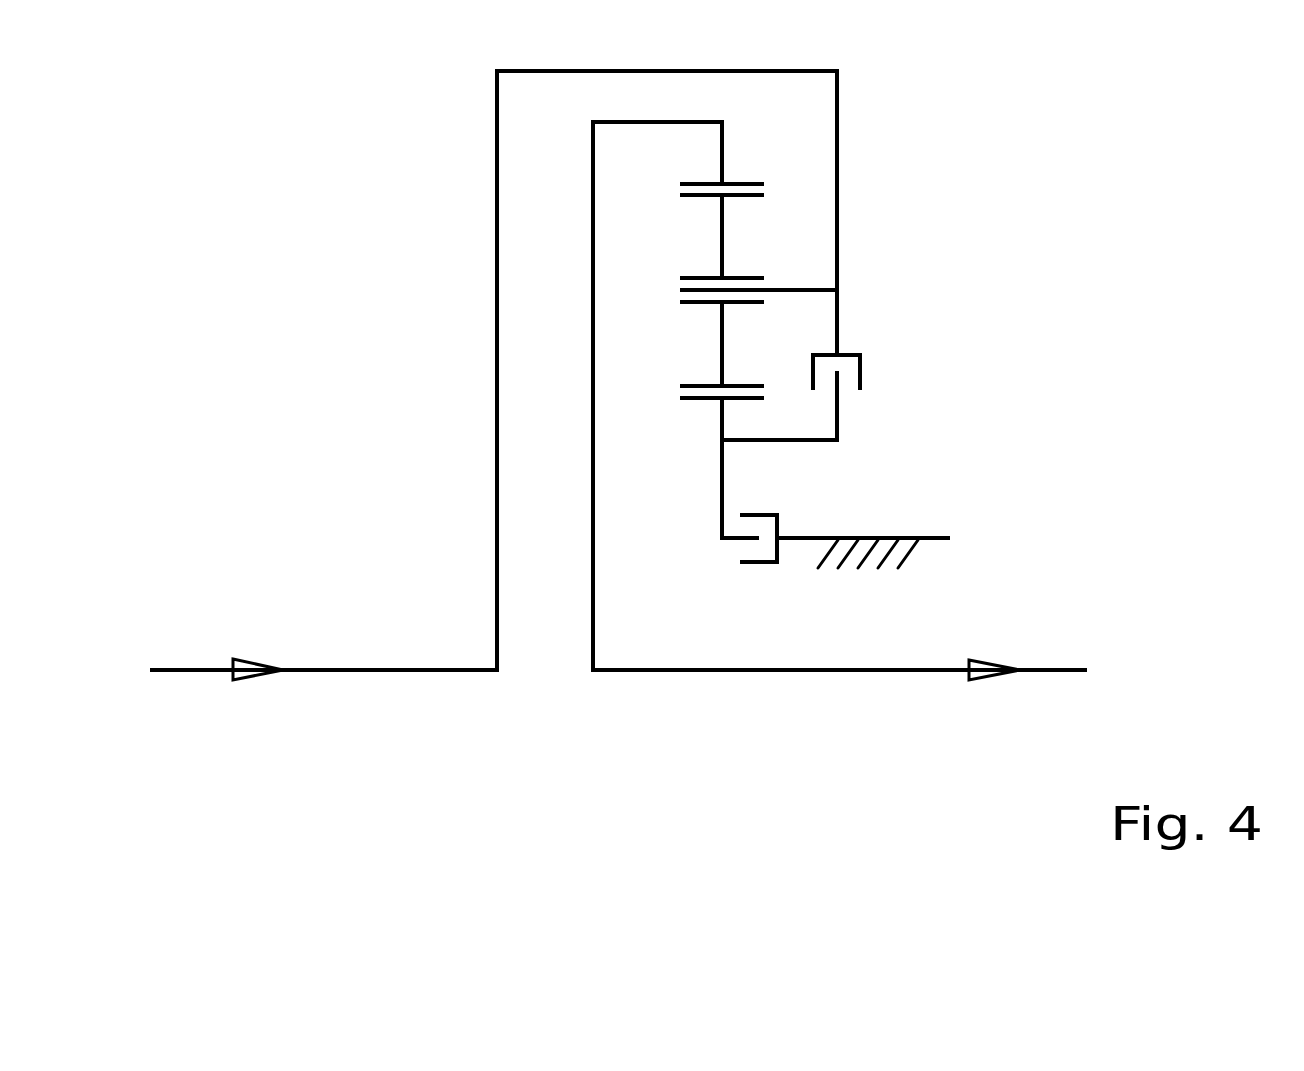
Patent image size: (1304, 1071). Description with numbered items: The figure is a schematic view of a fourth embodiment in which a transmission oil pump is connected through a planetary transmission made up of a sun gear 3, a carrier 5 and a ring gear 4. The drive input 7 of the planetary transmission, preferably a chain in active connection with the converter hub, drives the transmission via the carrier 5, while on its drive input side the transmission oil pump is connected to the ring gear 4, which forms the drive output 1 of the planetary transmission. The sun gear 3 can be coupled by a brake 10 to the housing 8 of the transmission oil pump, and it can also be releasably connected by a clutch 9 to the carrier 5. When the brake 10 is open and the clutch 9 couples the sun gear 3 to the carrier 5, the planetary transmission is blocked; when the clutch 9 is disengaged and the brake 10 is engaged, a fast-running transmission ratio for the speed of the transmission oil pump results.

The drive output 1 is at (937, 670).
The sun gear 3 is at (722, 420).
The ring gear 4 is at (722, 167).
The carrier 5 is at (797, 289).
The drive input 7 is at (377, 670).
The housing 8 is at (860, 540).
The clutch 9 is at (847, 371).
The brake 10 is at (762, 532).